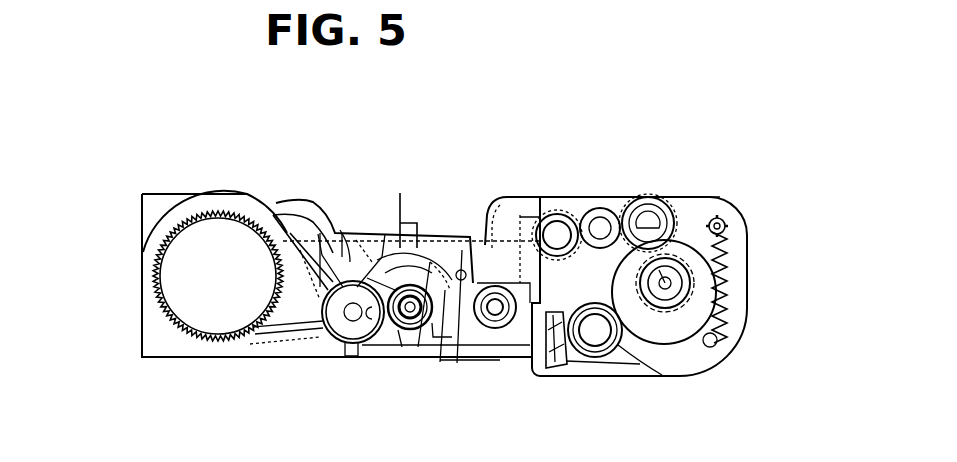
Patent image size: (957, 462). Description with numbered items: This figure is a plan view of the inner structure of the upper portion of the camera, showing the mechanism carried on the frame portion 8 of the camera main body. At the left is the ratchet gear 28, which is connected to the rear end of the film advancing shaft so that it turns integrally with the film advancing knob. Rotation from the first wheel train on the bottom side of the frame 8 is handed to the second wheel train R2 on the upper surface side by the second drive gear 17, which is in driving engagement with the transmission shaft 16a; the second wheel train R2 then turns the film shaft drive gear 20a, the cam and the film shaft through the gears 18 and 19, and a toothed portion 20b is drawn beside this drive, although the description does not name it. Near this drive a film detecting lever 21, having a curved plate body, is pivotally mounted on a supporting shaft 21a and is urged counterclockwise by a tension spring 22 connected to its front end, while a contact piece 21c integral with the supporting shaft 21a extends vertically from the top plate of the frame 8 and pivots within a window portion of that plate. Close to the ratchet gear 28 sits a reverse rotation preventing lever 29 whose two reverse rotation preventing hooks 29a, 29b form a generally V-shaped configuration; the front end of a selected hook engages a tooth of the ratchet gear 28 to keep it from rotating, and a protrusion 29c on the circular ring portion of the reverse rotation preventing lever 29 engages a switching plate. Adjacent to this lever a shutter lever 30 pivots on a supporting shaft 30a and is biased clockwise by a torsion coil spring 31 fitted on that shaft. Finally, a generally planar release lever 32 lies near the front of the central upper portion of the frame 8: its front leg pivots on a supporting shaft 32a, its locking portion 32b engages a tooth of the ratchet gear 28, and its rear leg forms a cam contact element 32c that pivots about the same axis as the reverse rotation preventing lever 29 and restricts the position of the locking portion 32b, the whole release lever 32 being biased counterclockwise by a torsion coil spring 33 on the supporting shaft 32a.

The frame portion 8 is at (141, 346).
The transmission shaft 16a is at (567, 197).
The second drive gear 17 is at (575, 197).
The gear 18 is at (610, 197).
The gear 19 is at (672, 197).
The film shaft drive gear 20a is at (668, 292).
The gear 20b is at (722, 289).
The film detecting lever 21 is at (632, 330).
The supporting shaft 21a is at (595, 346).
The contact piece 21c is at (547, 366).
The tension spring 22 is at (722, 245).
The ratchet gear 28 is at (182, 330).
The reverse rotation preventing lever 29 is at (320, 346).
The reverse rotation preventing hook 29a is at (318, 215).
The reverse rotation preventing hook 29b is at (266, 352).
The protrusion 29c is at (343, 358).
The shutter lever 30 is at (401, 193).
The supporting shaft 30a is at (461, 268).
The torsion coil spring 31 is at (425, 361).
The release lever 32 is at (500, 196).
The supporting shaft 32a is at (495, 334).
The locking portion 32b is at (290, 196).
The cam contact element 32c is at (338, 226).
The torsion coil spring 33 is at (452, 368).
The second wheel train R2 is at (640, 188).